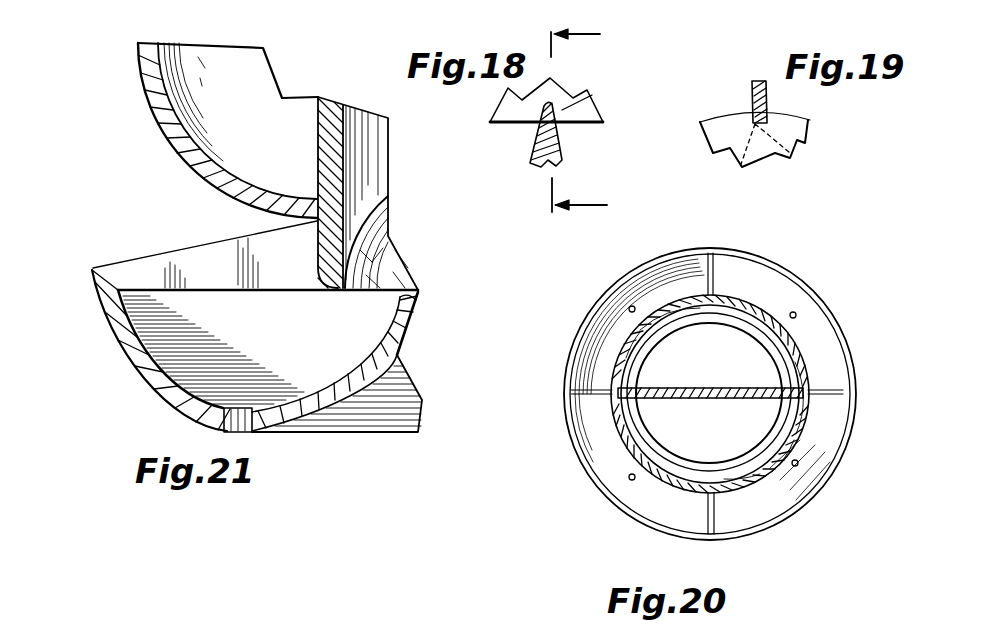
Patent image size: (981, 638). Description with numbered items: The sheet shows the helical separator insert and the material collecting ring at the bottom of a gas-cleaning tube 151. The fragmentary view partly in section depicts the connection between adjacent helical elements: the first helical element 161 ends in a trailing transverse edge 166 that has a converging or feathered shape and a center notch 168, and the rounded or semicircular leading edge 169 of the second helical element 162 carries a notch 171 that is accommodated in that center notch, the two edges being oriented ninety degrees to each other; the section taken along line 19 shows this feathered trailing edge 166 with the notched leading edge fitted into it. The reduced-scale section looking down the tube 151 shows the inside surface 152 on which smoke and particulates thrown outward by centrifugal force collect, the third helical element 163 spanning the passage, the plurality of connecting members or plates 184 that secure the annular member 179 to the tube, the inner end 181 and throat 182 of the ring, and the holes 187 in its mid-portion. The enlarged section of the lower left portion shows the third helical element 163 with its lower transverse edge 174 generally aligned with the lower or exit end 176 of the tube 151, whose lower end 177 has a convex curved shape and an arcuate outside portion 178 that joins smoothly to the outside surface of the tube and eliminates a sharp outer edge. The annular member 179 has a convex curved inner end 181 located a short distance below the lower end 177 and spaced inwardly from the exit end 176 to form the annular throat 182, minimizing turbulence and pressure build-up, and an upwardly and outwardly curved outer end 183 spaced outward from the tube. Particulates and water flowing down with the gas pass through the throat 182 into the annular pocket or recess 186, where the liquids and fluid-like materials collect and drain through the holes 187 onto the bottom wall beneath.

In FIG. 18, the section line 19 is at (600, 123).
In FIG. 21, the tube 151 is at (322, 106).
In FIG. 20, the tube 151 is at (744, 300).
In FIG. 21, the inside surface 152 is at (348, 122).
In FIG. 18, the first helical element 161 is at (508, 105).
In FIG. 19, the first helical element 161 is at (752, 91).
In FIG. 18, the second helical element 162 is at (564, 150).
In FIG. 19, the second helical element 162 is at (806, 128).
In FIG. 21, the third helical element 163 is at (382, 216).
In FIG. 20, the third helical element 163 is at (716, 388).
In FIG. 18, the trailing transverse edge 166 is at (597, 123).
In FIG. 19, the trailing transverse edge 166 is at (792, 149).
In FIG. 18, the center notch 168 is at (590, 92).
In FIG. 18, the leading edge 169 is at (556, 88).
In FIG. 19, the leading edge 169 is at (717, 120).
In FIG. 19, the notch 171 is at (734, 162).
In FIG. 21, the lower transverse edge 174 is at (420, 290).
In FIG. 21, the exit end 176 is at (325, 255).
In FIG. 21, the lower end 177 is at (372, 273).
In FIG. 21, the arcuate outside portion 178 is at (322, 283).
In FIG. 21, the annular member 179 is at (150, 388).
In FIG. 20, the annular member 179 is at (590, 480).
In FIG. 21, the inner end 181 is at (413, 311).
In FIG. 20, the inner end 181 is at (778, 346).
In FIG. 21, the annular throat 182 is at (405, 282).
In FIG. 20, the annular throat 182 is at (798, 366).
In FIG. 21, the outer end 183 is at (118, 328).
In FIG. 21, the connecting members 184 is at (190, 265).
In FIG. 20, the connecting members 184 is at (716, 266).
In FIG. 21, the annular pocket 186 is at (213, 350).
In FIG. 21, the holes 187 is at (241, 434).
In FIG. 20, the holes 187 is at (629, 307).